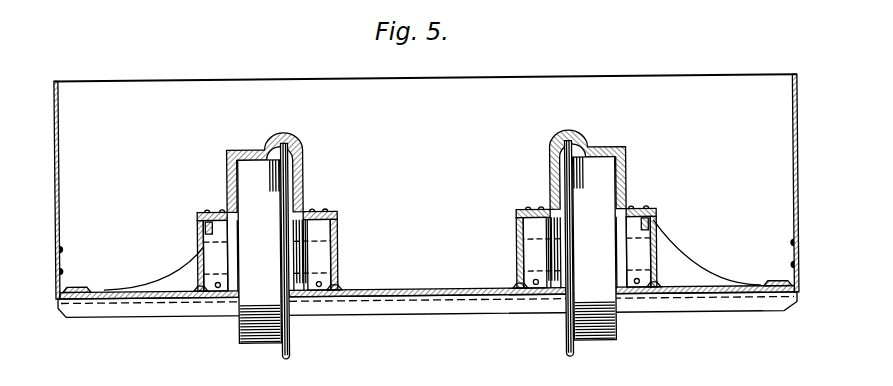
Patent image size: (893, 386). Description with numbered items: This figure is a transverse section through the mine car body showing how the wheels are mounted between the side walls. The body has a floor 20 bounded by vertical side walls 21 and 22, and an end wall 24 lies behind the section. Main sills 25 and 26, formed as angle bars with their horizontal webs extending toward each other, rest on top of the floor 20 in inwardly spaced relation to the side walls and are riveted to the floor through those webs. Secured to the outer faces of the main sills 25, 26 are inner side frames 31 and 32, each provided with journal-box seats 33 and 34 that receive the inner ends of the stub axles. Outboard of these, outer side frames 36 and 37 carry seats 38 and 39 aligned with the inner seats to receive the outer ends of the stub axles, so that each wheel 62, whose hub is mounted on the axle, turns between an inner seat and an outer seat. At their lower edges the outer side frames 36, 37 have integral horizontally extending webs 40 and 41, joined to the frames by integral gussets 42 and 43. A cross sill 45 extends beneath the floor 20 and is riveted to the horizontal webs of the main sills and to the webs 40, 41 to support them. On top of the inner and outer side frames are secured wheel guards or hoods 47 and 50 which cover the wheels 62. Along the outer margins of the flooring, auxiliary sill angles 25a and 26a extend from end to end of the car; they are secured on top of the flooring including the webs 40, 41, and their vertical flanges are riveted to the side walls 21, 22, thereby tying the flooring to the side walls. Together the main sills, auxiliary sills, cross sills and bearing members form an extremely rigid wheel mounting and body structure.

The floor 20 is at (406, 290).
The vertical side wall 21 is at (59, 194).
The vertical side wall 22 is at (794, 122).
The end wall 24 is at (542, 82).
The main sill 25 is at (338, 248).
The auxiliary sill angle 25a is at (65, 255).
The main sill 26 is at (514, 248).
The auxiliary sill angle 26a is at (792, 256).
The inner side frame 31 is at (340, 212).
The inner side frame 32 is at (515, 219).
The seat 33 is at (318, 239).
The seat 34 is at (531, 209).
The outer side frame 36 is at (200, 243).
The outer side frame 37 is at (658, 237).
The seat 38 is at (212, 210).
The seat 39 is at (637, 245).
The horizontally extending web 40 is at (137, 297).
The horizontally extending web 41 is at (708, 300).
The gusset 42 is at (158, 267).
The gusset 43 is at (682, 260).
The cross sill 45 is at (432, 303).
The wheel guard 47 is at (290, 136).
The wheel guard 50 is at (595, 149).
The wheel 62 is at (262, 325).